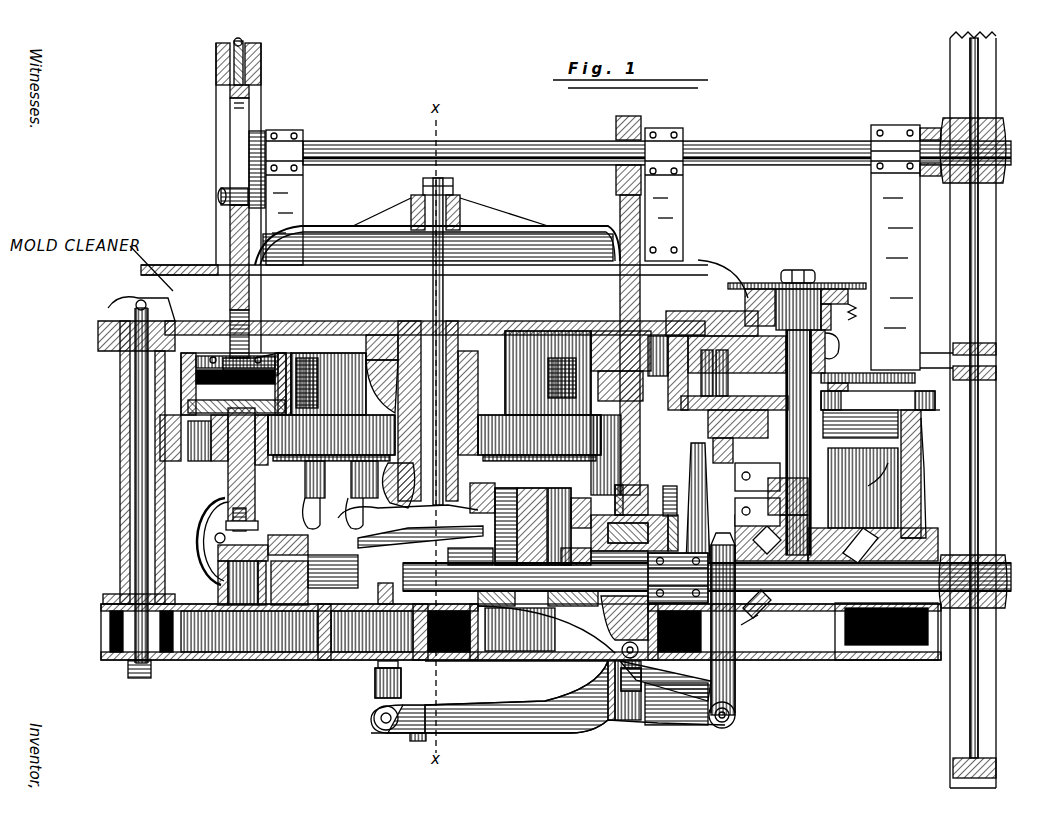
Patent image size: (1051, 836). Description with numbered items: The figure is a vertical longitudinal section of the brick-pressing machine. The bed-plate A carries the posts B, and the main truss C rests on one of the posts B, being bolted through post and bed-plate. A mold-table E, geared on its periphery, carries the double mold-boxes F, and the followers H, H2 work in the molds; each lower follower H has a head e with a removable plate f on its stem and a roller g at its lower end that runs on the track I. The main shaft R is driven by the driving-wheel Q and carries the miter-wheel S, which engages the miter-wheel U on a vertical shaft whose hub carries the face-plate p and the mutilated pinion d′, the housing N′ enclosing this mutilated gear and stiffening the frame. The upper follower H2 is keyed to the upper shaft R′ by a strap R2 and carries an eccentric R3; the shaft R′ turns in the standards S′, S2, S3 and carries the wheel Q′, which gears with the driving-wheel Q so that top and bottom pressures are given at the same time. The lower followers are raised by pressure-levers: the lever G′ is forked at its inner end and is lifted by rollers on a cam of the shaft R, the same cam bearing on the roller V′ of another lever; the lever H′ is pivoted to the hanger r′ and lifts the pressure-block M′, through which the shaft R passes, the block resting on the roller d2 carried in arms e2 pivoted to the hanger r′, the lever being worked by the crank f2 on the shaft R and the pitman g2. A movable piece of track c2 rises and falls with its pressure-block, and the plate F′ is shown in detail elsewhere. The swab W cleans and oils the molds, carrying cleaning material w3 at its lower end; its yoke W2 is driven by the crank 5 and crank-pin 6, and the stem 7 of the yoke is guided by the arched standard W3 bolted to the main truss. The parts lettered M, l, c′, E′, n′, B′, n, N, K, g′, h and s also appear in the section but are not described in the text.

The stem 7 is at (225, 35).
The arched standard W3 is at (253, 60).
The crank 5 is at (250, 123).
The yoke W2 is at (222, 150).
The crank-pin 6 is at (213, 190).
The standard S′ is at (290, 192).
The swab W is at (221, 229).
The upper shaft R′ is at (1018, 143).
The strap R2 is at (622, 108).
The eccentric R3 is at (608, 173).
The standard S2 is at (676, 172).
The standard S3 is at (863, 178).
The upper follower H2 is at (612, 272).
The wheel Q′ is at (990, 280).
The driving-wheel Q is at (990, 510).
The main shaft R is at (1003, 567).
The track I is at (498, 218).
The center spindle M is at (448, 204).
The face-plate p is at (838, 280).
The mutilated pinion d′ is at (806, 309).
The vertical shaft l is at (798, 422).
The cam piece c′ is at (743, 370).
The cross bar E′ is at (668, 305).
The block n′ is at (847, 396).
The side wall B′ is at (913, 417).
The housing N′ is at (915, 442).
The miter-wheel U is at (826, 505).
The posts B is at (112, 455).
The bed-plate A is at (93, 632).
The cleaning material w3 is at (235, 355).
The mold-boxes F is at (178, 380).
The head e is at (180, 399).
The mold-table E is at (170, 445).
The pressure-lever H′ is at (225, 480).
The wheel n is at (195, 512).
The bracket N is at (205, 540).
The roller g is at (451, 500).
The cam K is at (390, 485).
The cylinder g′ is at (331, 397).
The cylinder h is at (434, 456).
The main truss C is at (534, 351).
The plate F′ is at (518, 325).
The removable plate f is at (545, 323).
The pressure-lever G′ is at (533, 513).
The follower H is at (612, 465).
The roller V′ is at (581, 506).
The movable piece of track c2 is at (646, 500).
The crank f2 is at (375, 555).
The pin s is at (519, 538).
The pressure-block M′ is at (598, 612).
The roller d2 is at (612, 641).
The arms e2 is at (665, 685).
The hanger r′ is at (727, 657).
The miter-wheel S is at (747, 615).
The pitman g2 is at (365, 668).